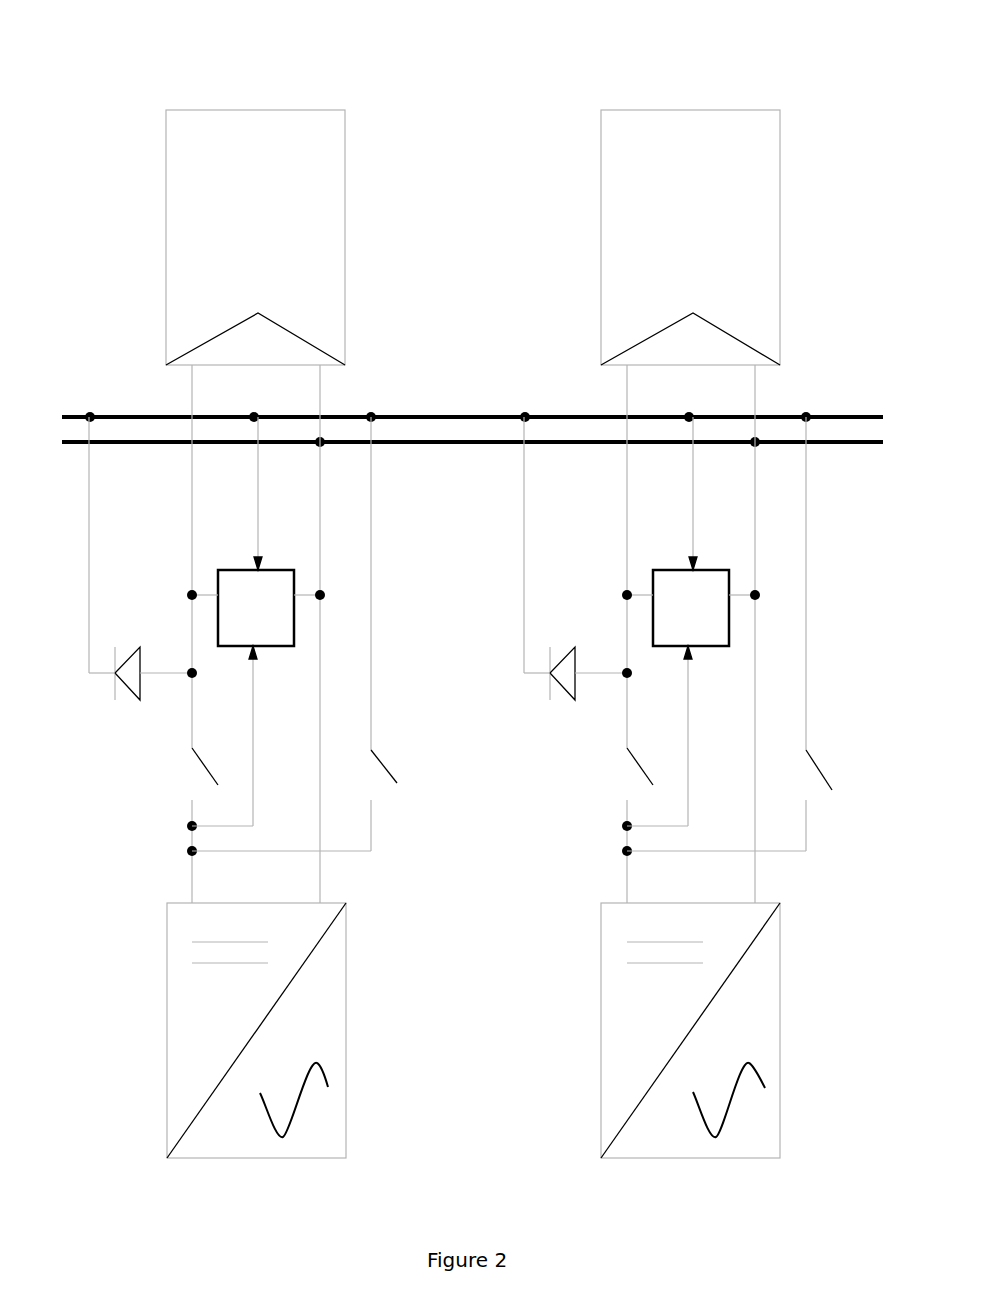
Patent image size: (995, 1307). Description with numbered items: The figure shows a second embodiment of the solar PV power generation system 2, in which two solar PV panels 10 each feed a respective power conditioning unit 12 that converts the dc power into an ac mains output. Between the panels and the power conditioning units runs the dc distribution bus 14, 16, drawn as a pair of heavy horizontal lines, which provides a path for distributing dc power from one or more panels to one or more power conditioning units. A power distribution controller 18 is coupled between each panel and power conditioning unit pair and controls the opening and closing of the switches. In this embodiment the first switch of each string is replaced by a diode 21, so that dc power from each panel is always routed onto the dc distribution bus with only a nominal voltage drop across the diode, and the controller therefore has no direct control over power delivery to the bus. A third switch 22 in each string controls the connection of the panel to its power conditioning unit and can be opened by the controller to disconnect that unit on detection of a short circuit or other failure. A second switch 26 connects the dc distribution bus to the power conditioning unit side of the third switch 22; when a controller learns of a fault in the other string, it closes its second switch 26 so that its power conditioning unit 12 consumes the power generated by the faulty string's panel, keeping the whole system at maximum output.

The photovoltaic power plant 2 is at (132, 65).
The solar PV panel 10 is at (170, 163).
The power conditioning unit 12 is at (170, 1032).
The dc distribution bus 14 is at (393, 445).
The positive DC bus line 16 is at (155, 413).
The power distribution controller 18 is at (300, 622).
The diode 21 is at (128, 645).
The third switch 22 is at (117, 775).
The second switch 26 is at (395, 813).